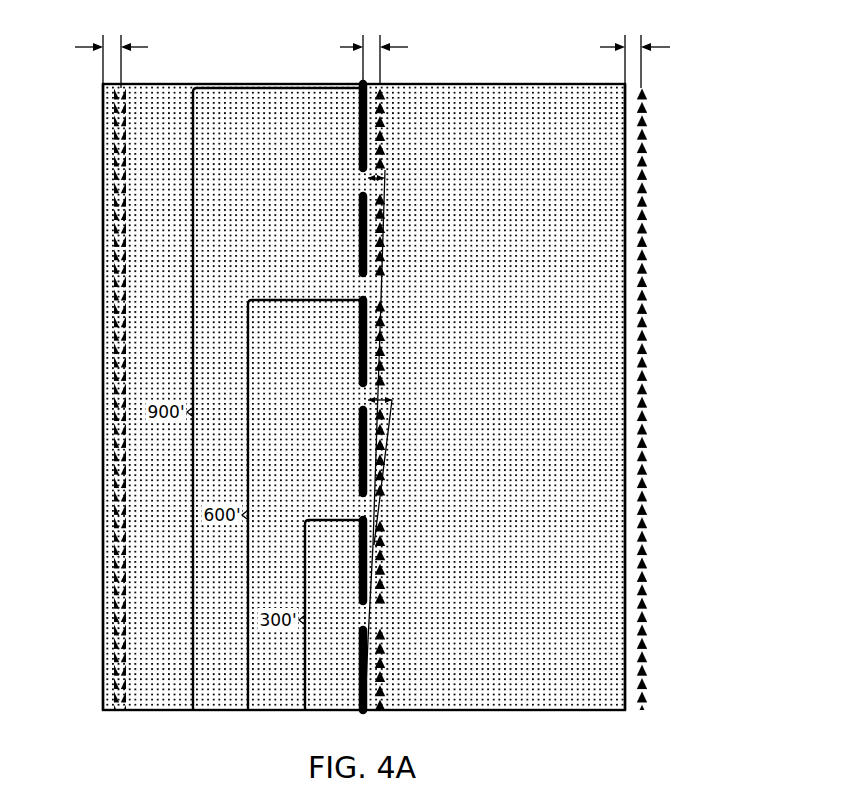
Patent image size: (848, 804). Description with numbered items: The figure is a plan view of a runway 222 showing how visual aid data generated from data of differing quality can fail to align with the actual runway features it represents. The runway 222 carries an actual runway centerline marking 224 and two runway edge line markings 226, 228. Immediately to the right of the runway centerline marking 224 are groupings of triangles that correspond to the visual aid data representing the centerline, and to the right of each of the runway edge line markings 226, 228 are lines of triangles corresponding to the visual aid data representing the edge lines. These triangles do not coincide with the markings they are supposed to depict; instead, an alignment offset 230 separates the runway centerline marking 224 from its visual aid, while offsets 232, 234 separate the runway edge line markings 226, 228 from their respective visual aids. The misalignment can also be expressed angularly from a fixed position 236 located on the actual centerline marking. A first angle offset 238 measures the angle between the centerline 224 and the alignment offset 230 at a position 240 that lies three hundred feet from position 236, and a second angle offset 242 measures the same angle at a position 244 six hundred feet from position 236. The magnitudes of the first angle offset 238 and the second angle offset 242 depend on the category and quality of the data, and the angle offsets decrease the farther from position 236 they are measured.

The runway 222 is at (519, 619).
The runway centerline marking 224 is at (353, 75).
The runway edge line marking 226 is at (93, 82).
The runway edge line marking 228 is at (612, 76).
The offset 230 is at (423, 49).
The offset 232 is at (160, 51).
The offset 234 is at (683, 51).
The position 236 is at (349, 703).
The first angle offset 238 is at (477, 404).
The position 240 is at (397, 518).
The second angle offset 242 is at (478, 182).
The position 244 is at (397, 299).